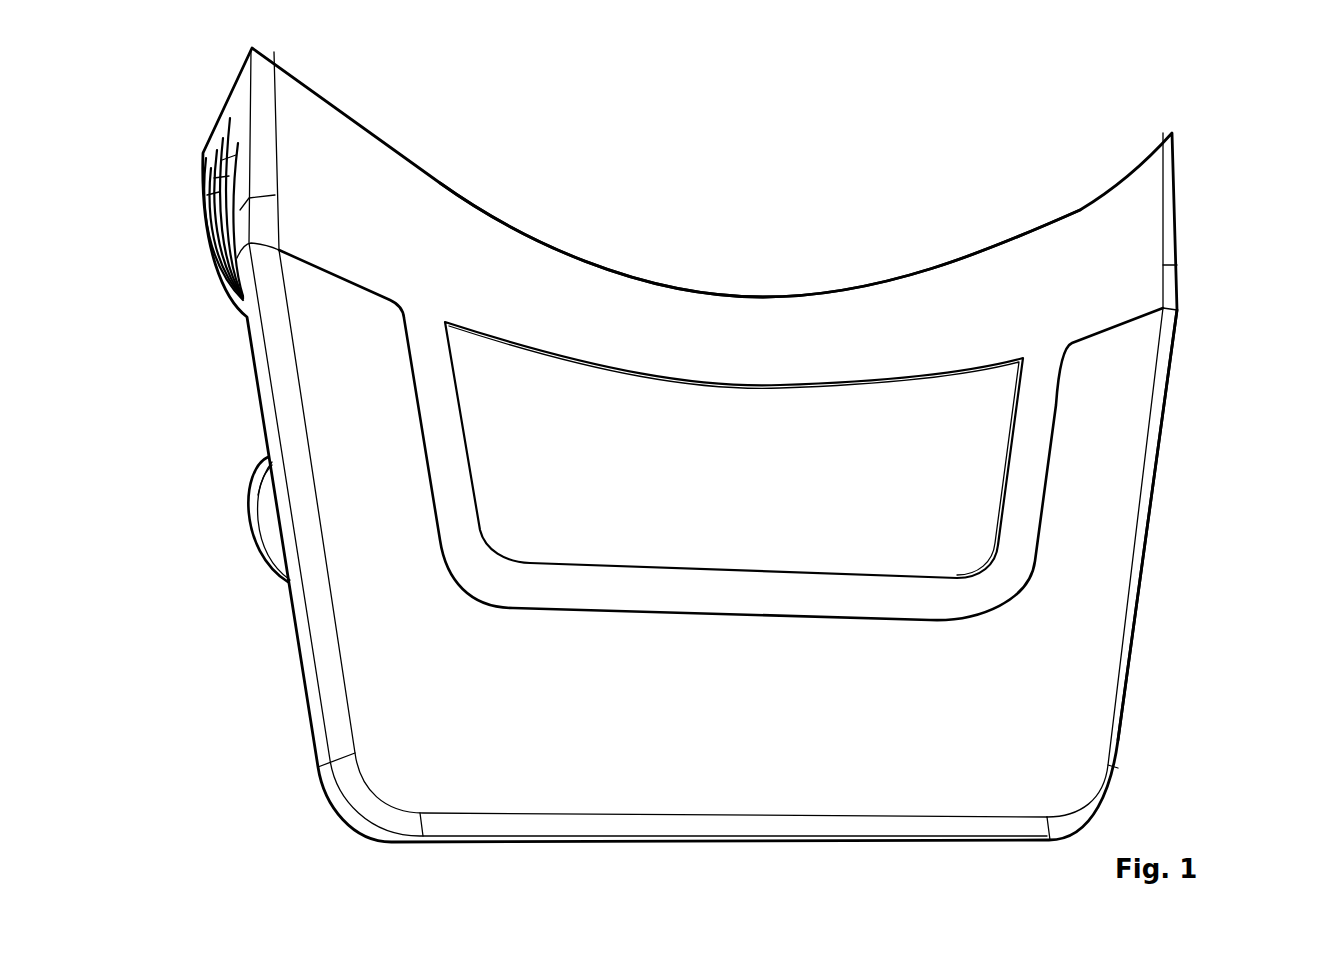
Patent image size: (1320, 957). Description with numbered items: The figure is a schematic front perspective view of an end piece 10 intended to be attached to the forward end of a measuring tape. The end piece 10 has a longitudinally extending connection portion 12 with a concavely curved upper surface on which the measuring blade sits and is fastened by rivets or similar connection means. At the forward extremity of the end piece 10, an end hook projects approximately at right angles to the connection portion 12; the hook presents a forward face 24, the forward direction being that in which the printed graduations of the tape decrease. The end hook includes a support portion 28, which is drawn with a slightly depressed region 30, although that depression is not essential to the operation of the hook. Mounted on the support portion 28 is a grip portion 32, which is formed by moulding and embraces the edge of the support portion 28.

The end piece 10 is at (150, 420).
The connection portion 12 is at (250, 550).
The forward face 24 is at (788, 327).
The support portion 28 is at (1028, 439).
The depressed region 30 is at (858, 472).
The grip portion 32 is at (1114, 518).